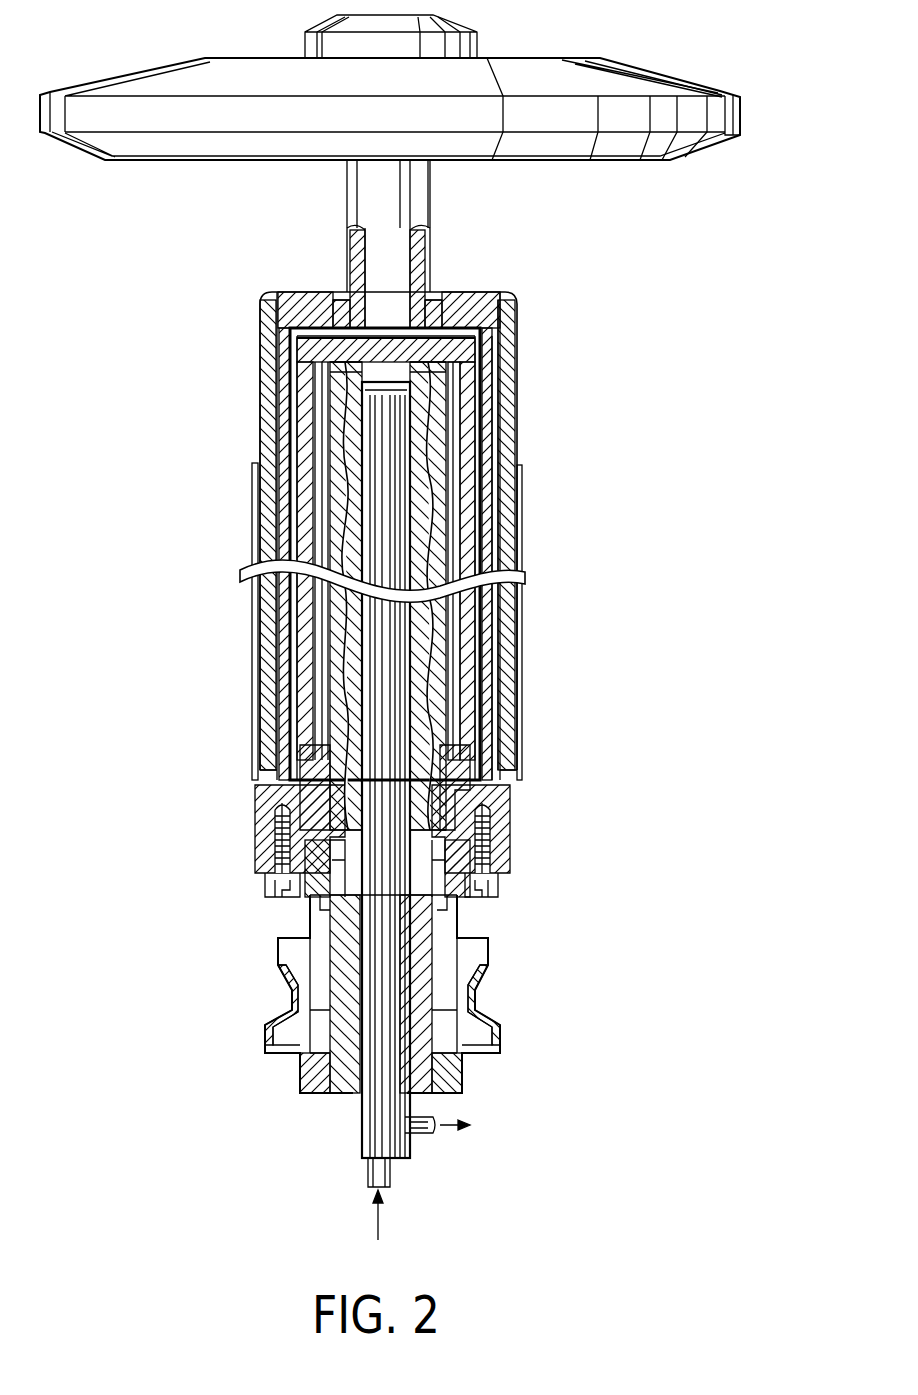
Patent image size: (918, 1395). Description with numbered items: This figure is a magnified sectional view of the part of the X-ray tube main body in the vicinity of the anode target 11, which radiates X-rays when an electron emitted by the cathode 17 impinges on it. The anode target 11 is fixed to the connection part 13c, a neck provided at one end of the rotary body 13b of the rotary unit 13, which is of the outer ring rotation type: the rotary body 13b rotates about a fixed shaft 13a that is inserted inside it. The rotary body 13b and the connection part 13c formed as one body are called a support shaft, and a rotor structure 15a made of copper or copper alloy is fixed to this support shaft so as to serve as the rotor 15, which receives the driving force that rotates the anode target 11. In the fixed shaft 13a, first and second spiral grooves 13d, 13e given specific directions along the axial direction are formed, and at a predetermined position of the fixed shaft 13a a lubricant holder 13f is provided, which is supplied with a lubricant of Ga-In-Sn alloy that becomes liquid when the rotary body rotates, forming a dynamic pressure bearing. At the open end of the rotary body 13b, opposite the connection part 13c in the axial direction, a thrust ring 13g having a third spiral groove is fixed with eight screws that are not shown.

The anode target 11 is at (555, 63).
The rotary unit 13 is at (434, 182).
The fixed shaft 13a is at (432, 720).
The rotary body 13b is at (337, 406).
The connection part 13c is at (345, 290).
The first spiral groove 13d is at (330, 655).
The second spiral groove 13e is at (330, 495).
The lubricant holder 13f is at (318, 700).
The thrust ring 13g is at (510, 852).
The rotor 15 is at (492, 392).
The rotor structure 15a is at (520, 497).
The cathode 17 is at (425, 920).